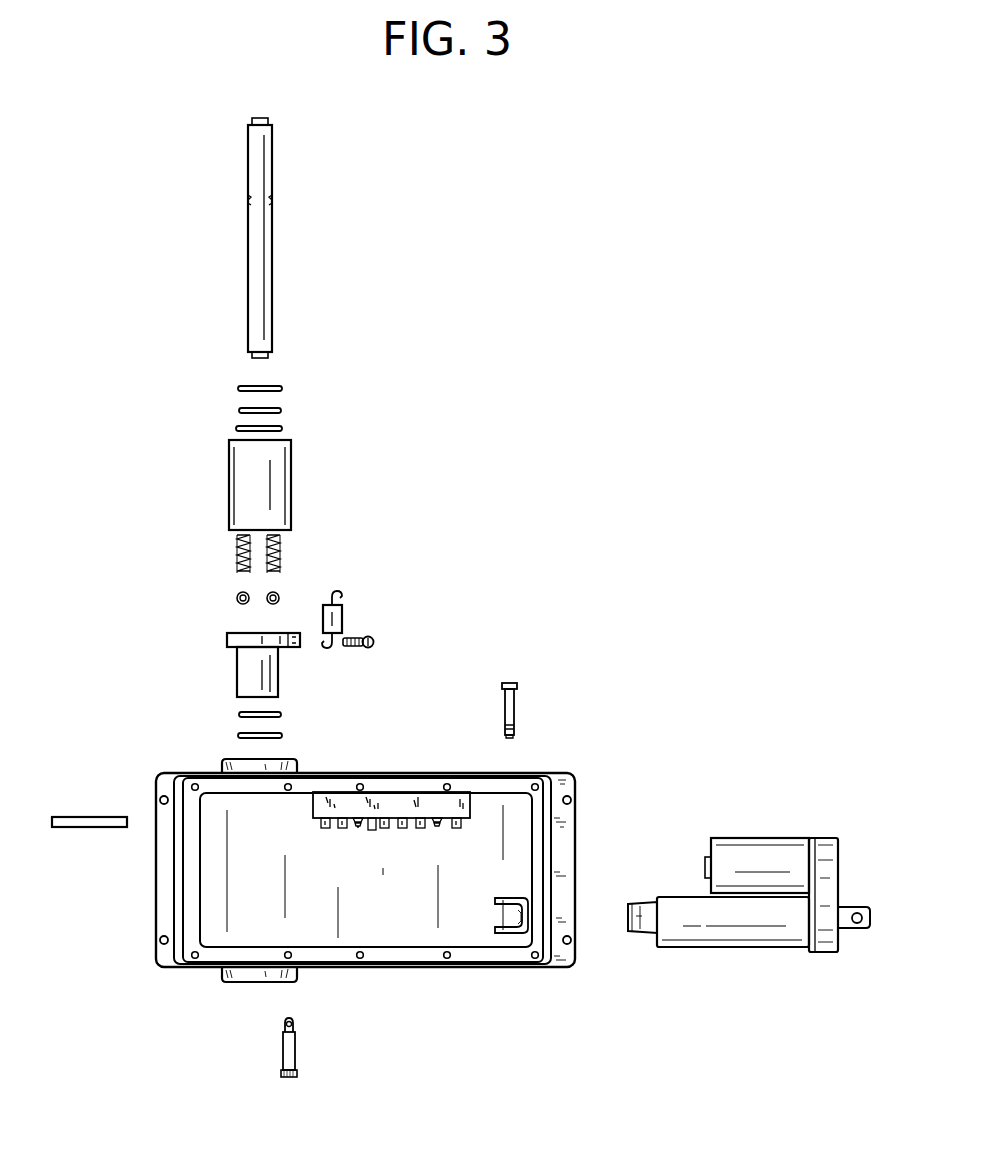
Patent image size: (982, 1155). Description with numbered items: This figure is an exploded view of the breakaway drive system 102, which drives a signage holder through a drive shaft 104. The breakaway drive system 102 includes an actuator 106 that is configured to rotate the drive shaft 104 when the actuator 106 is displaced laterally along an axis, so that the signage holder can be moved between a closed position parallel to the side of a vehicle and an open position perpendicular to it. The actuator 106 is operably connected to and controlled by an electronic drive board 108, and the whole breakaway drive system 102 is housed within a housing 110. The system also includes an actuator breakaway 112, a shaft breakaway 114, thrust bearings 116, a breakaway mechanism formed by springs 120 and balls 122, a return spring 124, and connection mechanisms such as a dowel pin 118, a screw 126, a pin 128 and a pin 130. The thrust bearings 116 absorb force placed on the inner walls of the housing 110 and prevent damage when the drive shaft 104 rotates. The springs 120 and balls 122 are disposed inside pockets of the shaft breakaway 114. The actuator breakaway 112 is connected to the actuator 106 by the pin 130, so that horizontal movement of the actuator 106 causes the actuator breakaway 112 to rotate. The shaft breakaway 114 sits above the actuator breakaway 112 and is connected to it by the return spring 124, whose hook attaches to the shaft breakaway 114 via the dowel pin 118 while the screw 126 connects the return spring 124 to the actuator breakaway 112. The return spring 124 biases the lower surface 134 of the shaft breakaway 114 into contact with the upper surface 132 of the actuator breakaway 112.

The breakaway drive system 102 is at (441, 513).
The drive shaft 104 is at (273, 216).
The actuator 106 is at (760, 838).
The electronic drive board 108 is at (399, 801).
The housing 110 is at (510, 968).
The actuator breakaway 112 is at (248, 684).
The shaft breakaway 114 is at (247, 462).
The thrust bearings 116 is at (272, 386).
The dowel pin 118 is at (112, 828).
The springs 120 is at (236, 564).
The balls 122 is at (236, 599).
The return spring 124 is at (343, 617).
The screw 126 is at (369, 649).
The pin 128 is at (518, 695).
The pin 130 is at (297, 1040).
The upper surface 132 is at (227, 630).
The lower surface 134 is at (232, 531).